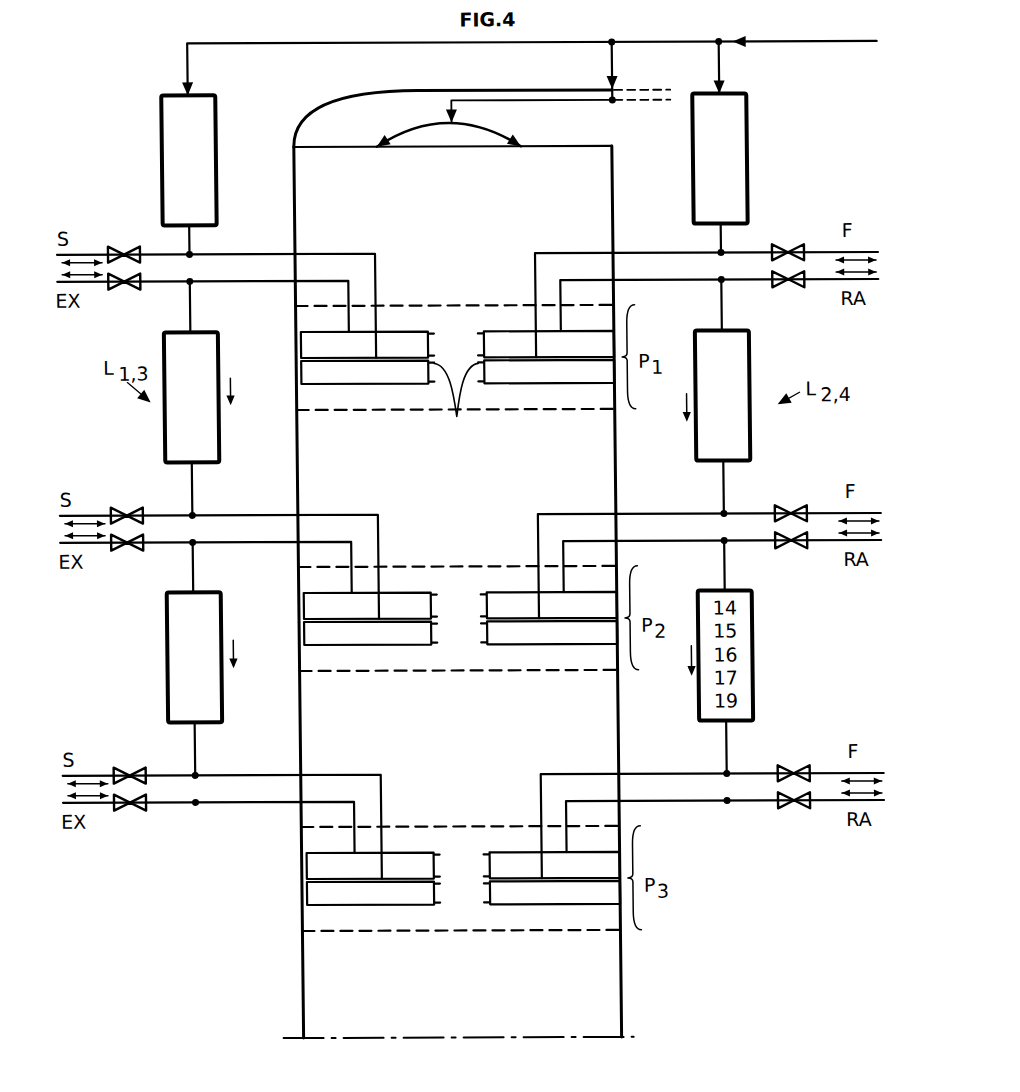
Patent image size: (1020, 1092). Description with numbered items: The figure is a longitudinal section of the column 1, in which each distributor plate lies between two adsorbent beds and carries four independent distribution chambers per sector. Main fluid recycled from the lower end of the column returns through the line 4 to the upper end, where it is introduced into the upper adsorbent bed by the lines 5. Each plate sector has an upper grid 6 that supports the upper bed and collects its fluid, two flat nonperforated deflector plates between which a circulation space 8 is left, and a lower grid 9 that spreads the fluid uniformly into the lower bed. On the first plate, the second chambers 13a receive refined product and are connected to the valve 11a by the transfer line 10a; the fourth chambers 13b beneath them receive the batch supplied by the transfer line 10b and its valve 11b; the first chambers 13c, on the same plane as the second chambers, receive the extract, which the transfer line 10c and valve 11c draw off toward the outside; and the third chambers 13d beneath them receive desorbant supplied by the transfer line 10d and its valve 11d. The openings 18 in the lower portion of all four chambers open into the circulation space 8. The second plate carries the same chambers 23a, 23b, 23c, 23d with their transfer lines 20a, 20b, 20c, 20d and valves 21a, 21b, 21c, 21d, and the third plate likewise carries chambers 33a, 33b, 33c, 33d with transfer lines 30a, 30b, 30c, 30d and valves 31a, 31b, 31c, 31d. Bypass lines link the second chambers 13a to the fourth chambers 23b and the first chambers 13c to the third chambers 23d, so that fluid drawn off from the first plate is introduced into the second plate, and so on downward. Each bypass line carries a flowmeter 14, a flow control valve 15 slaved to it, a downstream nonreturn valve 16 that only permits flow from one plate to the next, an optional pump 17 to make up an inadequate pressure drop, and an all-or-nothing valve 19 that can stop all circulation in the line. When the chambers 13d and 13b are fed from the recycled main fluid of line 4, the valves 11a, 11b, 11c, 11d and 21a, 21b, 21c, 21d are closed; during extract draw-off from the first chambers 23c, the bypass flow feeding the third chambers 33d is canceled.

The column 1 is at (158, 936).
The line 4 is at (791, 43).
The lines 5 is at (491, 124).
The upper grid 6 is at (435, 297).
The circulation space 8 is at (452, 298).
The lower grid 9 is at (436, 413).
The transfer line 10a is at (719, 305).
The transfer line 10b is at (706, 279).
The transfer line 10c is at (203, 307).
The transfer line 10d is at (216, 281).
The valve 11a is at (791, 297).
The valve 11b is at (790, 230).
The valve 11c is at (125, 300).
The valve 11d is at (125, 234).
The second chambers 13a is at (545, 293).
The fourth chambers 13b is at (546, 407).
The first chambers 13c is at (367, 294).
The third chambers 13d is at (368, 408).
The flowmeter 14 is at (188, 160).
The valve for flow control 15 is at (719, 158).
The nonreturn valve 16 is at (191, 397).
The pump 17 is at (722, 395).
The openings 18 is at (456, 406).
The all-or-nothing valve 19 is at (194, 657).
The transfer line 20a is at (722, 566).
The transfer line 20b is at (709, 540).
The transfer line 20c is at (206, 568).
The transfer line 20d is at (219, 542).
The valve 21a is at (794, 558).
The valve 21b is at (793, 491).
The valve 21c is at (128, 561).
The valve 21d is at (128, 495).
The second chambers 23a is at (545, 554).
The fourth chambers 23b is at (549, 668).
The first chambers 23c is at (370, 555).
The third chambers 23d is at (371, 669).
The transfer line 30a is at (725, 826).
The transfer line 30b is at (712, 800).
The transfer line 30c is at (209, 828).
The transfer line 30d is at (222, 802).
The valve 31a is at (797, 818).
The valve 31b is at (796, 751).
The valve 31c is at (131, 821).
The valve 31d is at (131, 755).
The second chambers 33a is at (550, 814).
The fourth chambers 33b is at (552, 928).
The first chambers 33c is at (372, 815).
The third chambers 33d is at (374, 929).